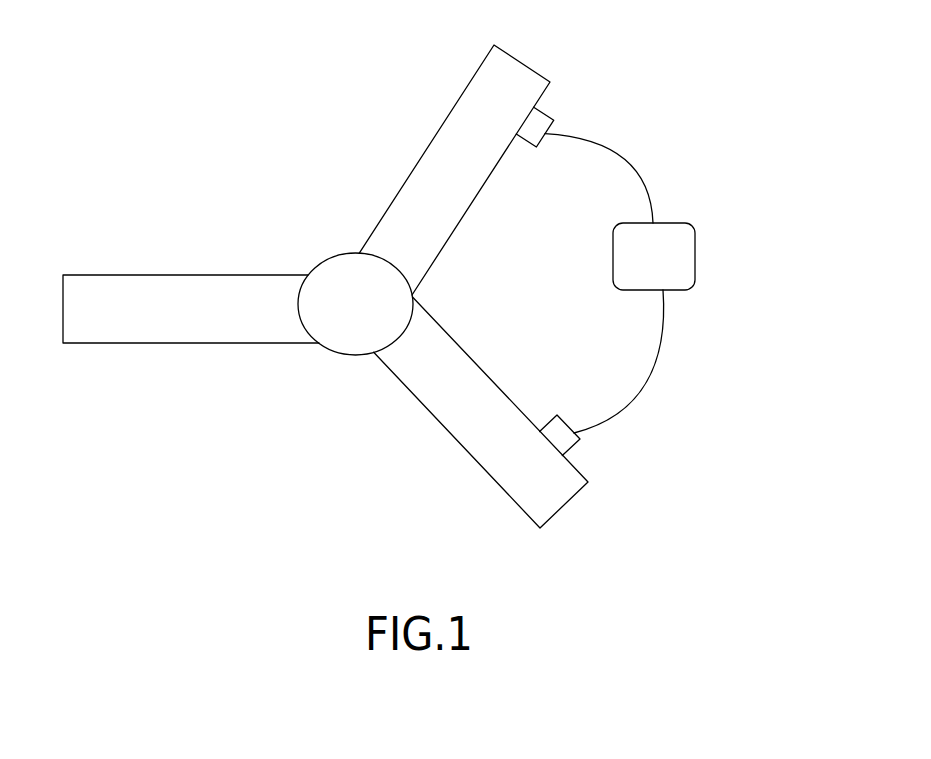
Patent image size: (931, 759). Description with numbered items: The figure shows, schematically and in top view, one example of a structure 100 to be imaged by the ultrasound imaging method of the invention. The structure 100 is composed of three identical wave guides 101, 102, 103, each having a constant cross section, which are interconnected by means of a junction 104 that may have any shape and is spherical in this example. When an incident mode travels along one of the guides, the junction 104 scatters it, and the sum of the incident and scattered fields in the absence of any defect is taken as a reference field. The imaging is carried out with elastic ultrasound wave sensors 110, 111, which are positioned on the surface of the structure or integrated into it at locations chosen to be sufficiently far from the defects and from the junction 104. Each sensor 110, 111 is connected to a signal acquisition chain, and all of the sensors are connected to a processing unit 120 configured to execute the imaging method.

The structure 100 is at (232, 148).
The wave guide 101 is at (170, 297).
The wave guide 102 is at (457, 157).
The wave guide 103 is at (448, 418).
The junction 104 is at (413, 297).
The elastic ultrasound wave sensor 110 is at (556, 119).
The elastic ultrasound wave sensor 111 is at (582, 442).
The processing unit 120 is at (695, 258).